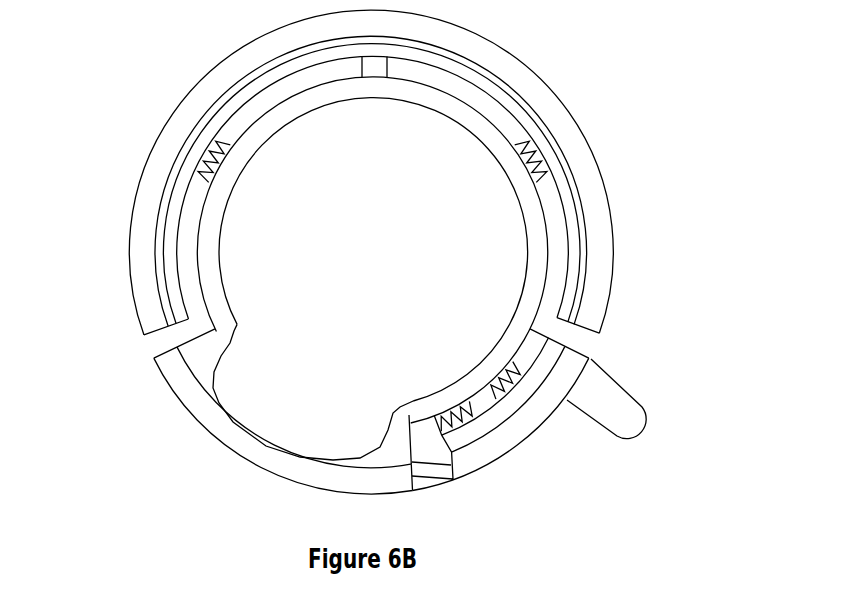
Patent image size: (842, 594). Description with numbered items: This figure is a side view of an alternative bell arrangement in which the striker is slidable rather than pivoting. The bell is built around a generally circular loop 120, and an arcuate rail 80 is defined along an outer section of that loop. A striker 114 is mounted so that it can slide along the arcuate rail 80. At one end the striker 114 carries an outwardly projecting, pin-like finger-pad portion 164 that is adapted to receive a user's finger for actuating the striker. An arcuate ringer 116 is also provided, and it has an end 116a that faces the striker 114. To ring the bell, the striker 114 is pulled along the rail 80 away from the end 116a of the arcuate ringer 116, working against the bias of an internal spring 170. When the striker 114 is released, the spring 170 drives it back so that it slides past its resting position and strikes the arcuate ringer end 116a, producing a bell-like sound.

The arcuate ringer 116 is at (597, 182).
The end of the arcuate ringer 116a is at (585, 330).
The generally circular loop 120 is at (217, 302).
The arcuate rail 80 is at (425, 467).
The striker 114 is at (547, 428).
The finger-pad portion 164 is at (628, 417).
The internal spring 170 is at (472, 416).